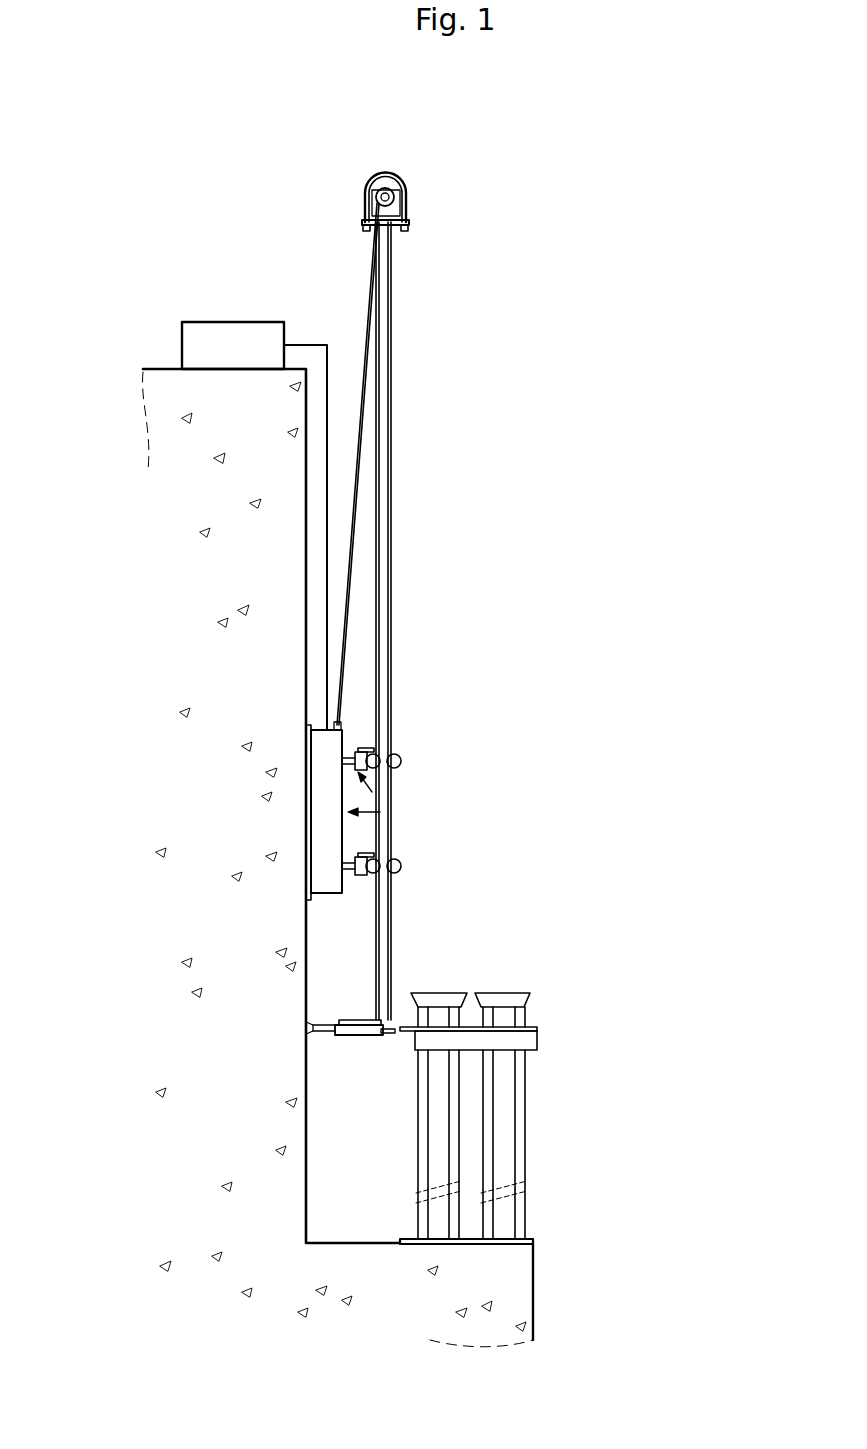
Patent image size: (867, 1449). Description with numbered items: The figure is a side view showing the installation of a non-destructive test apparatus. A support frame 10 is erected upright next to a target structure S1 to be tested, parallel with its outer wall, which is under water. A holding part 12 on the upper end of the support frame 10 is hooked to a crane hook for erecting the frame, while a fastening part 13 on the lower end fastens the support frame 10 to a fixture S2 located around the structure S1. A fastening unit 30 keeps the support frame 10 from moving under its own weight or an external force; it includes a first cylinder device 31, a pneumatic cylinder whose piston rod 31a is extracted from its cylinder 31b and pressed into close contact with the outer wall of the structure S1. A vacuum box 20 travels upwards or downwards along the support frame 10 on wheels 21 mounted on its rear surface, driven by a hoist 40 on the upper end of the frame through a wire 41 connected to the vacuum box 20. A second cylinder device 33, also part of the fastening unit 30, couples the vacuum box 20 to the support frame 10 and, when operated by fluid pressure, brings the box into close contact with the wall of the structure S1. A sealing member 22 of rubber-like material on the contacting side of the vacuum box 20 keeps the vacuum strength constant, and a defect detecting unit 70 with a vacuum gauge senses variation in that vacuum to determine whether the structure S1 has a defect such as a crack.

The support frame 10 is at (392, 432).
The holding part 12 is at (407, 180).
The fastening part 13 is at (391, 1036).
The vacuum box 20 is at (380, 812).
The wheels 21 is at (402, 758).
The sealing member 22 is at (340, 745).
The fastening unit 30 is at (784, 863).
The first cylinder device 31 is at (464, 928).
The piston rod 31a is at (345, 1020).
The cylinder 31b is at (385, 1025).
The second cylinder device 33 is at (372, 792).
The hoist 40 is at (392, 199).
The wire 41 is at (363, 372).
The defect detecting unit 70 is at (232, 322).
The structure S1 is at (290, 1197).
The fixture S2 is at (423, 1133).